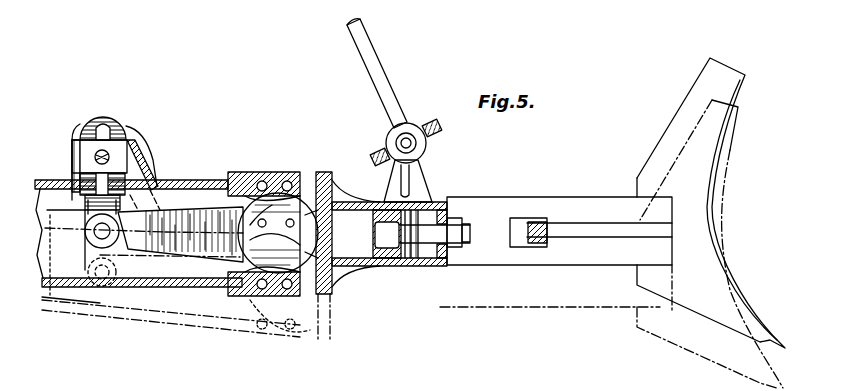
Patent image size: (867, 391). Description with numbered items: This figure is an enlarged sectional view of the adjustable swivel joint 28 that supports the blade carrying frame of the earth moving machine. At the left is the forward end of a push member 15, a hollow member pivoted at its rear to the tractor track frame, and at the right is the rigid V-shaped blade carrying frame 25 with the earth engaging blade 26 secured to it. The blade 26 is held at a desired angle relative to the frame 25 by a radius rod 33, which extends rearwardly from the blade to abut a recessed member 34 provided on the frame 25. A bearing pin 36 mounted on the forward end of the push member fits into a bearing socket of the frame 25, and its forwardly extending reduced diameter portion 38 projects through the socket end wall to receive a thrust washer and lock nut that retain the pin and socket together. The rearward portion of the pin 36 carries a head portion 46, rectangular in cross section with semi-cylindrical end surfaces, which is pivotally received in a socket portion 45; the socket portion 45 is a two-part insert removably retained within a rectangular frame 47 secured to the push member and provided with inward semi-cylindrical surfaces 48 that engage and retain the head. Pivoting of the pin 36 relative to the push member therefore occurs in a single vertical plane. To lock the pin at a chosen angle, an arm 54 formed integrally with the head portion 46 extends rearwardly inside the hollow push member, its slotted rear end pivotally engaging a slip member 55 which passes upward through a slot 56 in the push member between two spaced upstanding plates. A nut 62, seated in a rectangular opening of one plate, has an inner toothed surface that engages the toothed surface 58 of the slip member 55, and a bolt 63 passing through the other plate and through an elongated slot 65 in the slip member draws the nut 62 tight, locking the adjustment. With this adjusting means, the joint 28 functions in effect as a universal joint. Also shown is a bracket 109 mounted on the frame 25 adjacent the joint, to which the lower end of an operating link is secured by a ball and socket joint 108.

The push member 15 is at (178, 180).
The blade carrying frame 25 is at (585, 205).
The earth engaging blade 26 is at (730, 70).
The swivel joint 28 is at (345, 300).
The radius rod 33 is at (585, 238).
The recessed member 34 is at (530, 218).
The bearing pin 36 is at (392, 258).
The reduced diameter portion 38 is at (448, 203).
The socket portion 45 is at (283, 190).
The head portion 46 is at (272, 200).
The rectangular frame 47 is at (236, 172).
The semi-cylindrical surface 48 is at (313, 195).
The arm 54 is at (190, 255).
The slip member 55 is at (120, 131).
The slot 56 is at (150, 170).
The toothed surface 58 is at (73, 186).
The nut 62 is at (86, 150).
The bolt 63 is at (95, 157).
The elongated slot 65 is at (103, 130).
The ball and socket joint 108 is at (410, 127).
The bracket 109 is at (420, 178).